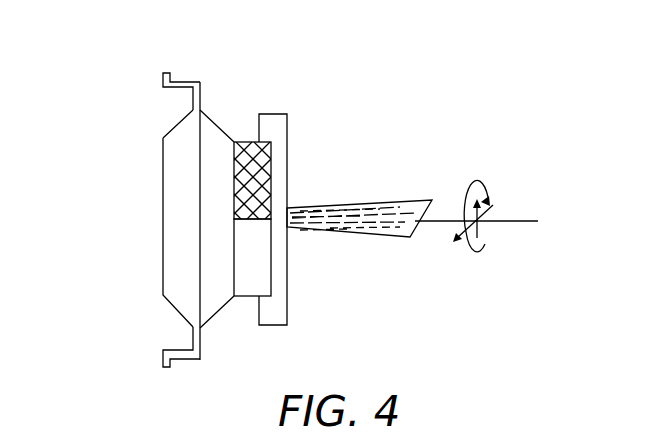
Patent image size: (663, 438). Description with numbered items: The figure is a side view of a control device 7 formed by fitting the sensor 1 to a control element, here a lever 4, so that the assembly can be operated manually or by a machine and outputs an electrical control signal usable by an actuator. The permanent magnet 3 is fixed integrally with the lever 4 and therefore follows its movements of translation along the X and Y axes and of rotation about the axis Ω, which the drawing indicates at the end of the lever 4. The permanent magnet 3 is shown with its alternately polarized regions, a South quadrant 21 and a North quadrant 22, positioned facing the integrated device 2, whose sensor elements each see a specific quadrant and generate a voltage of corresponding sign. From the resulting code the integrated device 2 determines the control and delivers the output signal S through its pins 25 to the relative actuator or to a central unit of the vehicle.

The sensor 1 is at (209, 88).
The integrated device 2 is at (218, 148).
The permanent magnet 3 is at (276, 282).
The lever 4 is at (370, 238).
The control device 7 is at (377, 148).
The South quadrant 21 is at (248, 289).
The North quadrant 22 is at (242, 146).
The pins 25 is at (185, 81).